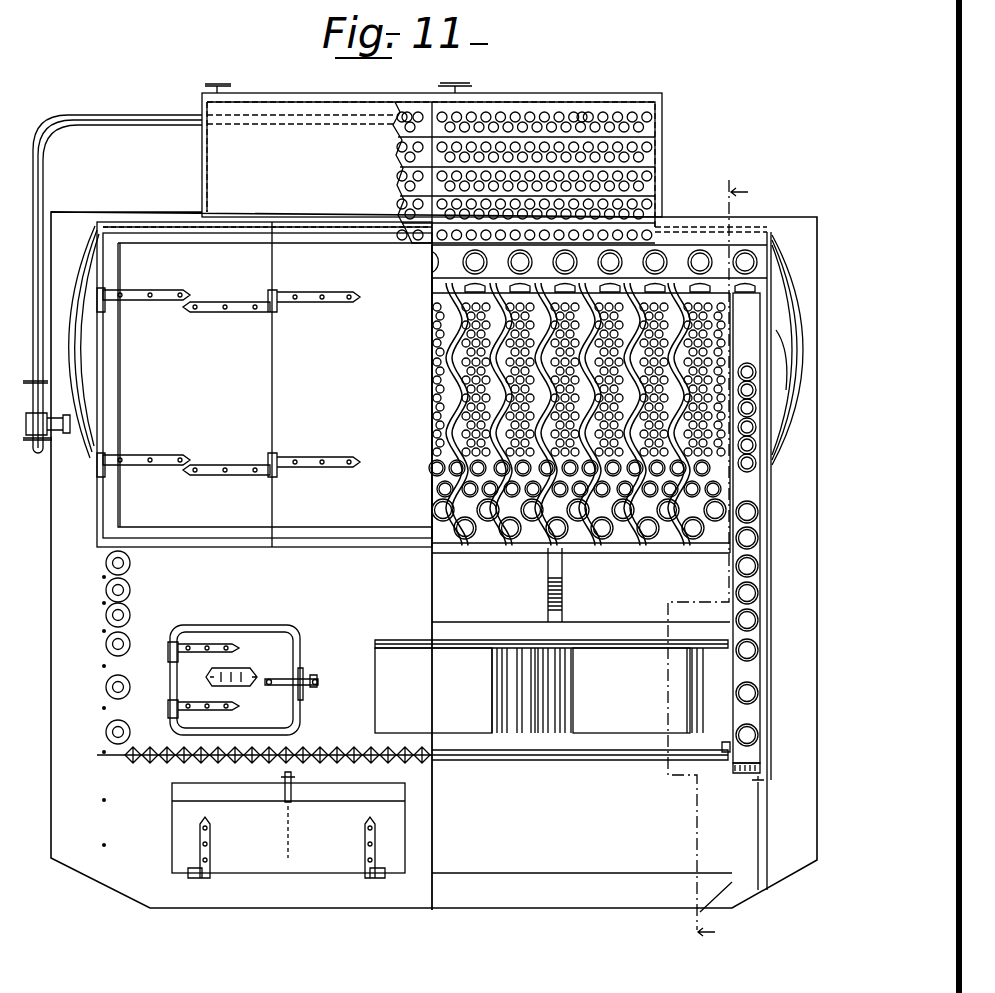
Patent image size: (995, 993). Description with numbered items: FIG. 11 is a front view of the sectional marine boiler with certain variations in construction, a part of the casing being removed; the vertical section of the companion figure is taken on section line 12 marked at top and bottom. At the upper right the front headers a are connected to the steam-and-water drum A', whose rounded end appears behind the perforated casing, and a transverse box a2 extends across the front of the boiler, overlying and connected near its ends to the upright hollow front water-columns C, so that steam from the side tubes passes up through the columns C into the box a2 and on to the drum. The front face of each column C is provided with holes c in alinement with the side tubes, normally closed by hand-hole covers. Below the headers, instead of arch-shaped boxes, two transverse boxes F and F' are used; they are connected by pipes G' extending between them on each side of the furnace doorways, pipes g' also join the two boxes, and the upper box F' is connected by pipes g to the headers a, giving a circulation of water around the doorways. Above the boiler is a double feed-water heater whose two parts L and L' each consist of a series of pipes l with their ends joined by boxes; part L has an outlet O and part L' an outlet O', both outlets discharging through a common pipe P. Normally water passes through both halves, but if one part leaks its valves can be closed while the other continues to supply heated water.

The outlet O' is at (432, 147).
The outlet O is at (455, 81).
The pipe P is at (112, 286).
The feed-water heater part L is at (533, 172).
The feed-water heater part L' is at (403, 94).
The pipes l is at (583, 113).
The box a2 is at (676, 262).
The header a is at (503, 548).
The water-column C is at (776, 748).
The holes c is at (751, 445).
The steam-and-water drum A' is at (787, 350).
The section line 12 is at (708, 563).
The door E is at (429, 680).
The pipes G' is at (599, 690).
The transverse box F' is at (551, 635).
The transverse box F is at (581, 746).
The pipes g is at (581, 585).
The pipes g' is at (530, 717).